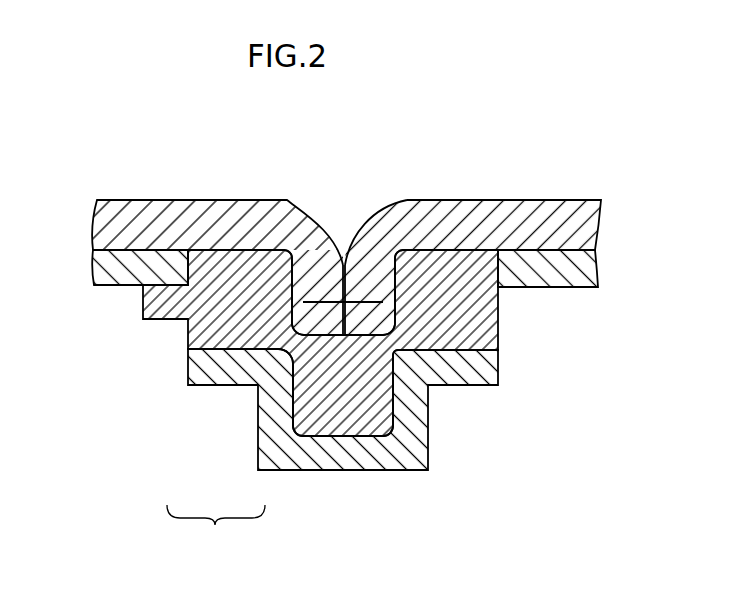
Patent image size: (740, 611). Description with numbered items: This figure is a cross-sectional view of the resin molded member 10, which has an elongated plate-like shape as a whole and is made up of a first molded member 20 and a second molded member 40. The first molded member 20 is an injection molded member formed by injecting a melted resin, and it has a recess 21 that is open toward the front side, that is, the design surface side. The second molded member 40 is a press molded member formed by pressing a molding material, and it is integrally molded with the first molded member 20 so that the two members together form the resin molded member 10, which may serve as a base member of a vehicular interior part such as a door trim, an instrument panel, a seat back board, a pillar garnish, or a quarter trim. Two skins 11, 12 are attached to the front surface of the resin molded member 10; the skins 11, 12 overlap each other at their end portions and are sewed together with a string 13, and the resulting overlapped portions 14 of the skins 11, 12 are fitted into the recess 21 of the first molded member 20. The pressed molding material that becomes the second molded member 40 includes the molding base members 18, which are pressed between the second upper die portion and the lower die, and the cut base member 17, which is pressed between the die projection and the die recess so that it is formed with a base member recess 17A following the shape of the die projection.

The resin molded member 10 is at (216, 535).
The skin 11 is at (158, 208).
The skin 12 is at (562, 230).
The string 13 is at (324, 294).
The overlapped portions 14 is at (370, 272).
The cut base member 17 is at (415, 444).
The base member recess 17A is at (295, 392).
The molding base member 18 is at (123, 269).
The first molded member 20 is at (204, 340).
The recess 21 is at (378, 335).
The second molded member 40 is at (268, 436).